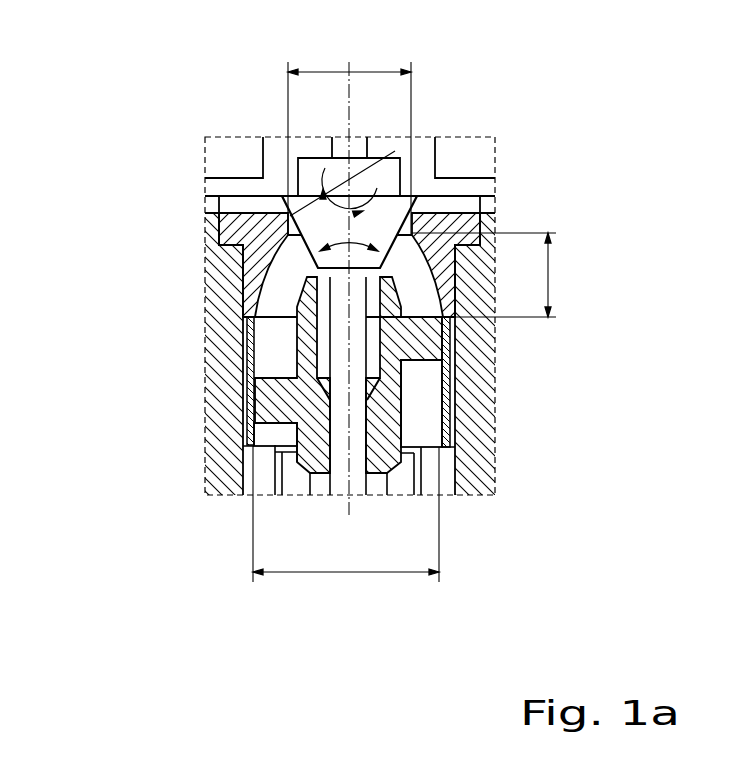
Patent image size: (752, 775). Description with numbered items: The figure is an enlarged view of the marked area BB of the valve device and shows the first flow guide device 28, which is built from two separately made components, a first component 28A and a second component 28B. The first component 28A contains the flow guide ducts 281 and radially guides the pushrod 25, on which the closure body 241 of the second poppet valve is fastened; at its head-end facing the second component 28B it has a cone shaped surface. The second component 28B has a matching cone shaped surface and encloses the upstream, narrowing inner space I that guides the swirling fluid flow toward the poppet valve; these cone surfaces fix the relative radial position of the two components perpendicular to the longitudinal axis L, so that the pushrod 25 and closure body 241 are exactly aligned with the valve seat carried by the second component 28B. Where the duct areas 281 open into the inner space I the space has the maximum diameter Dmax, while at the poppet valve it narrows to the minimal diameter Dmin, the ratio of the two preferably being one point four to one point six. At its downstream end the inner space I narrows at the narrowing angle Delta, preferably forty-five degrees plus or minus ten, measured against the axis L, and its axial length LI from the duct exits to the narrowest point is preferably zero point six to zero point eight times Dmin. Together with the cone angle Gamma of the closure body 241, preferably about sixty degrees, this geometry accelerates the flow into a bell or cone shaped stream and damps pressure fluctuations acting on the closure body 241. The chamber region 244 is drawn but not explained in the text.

The marked area BB is at (465, 137).
The first flow guide device 28 is at (460, 413).
The first component 28A is at (232, 377).
The second component 28B is at (228, 266).
The closure body 241 is at (377, 224).
The spray chamber 244 is at (285, 291).
The pushrod 25 is at (350, 410).
The flow guide ducts 281 is at (420, 422).
The inner space I is at (407, 271).
The longitudinal axis L is at (338, 341).
The narrowing angle Delta is at (330, 213).
The cone angle Gamma is at (290, 248).
The minimal diameter Dmin is at (349, 135).
The maximum diameter Dmax is at (346, 514).
The axial length LI is at (484, 275).